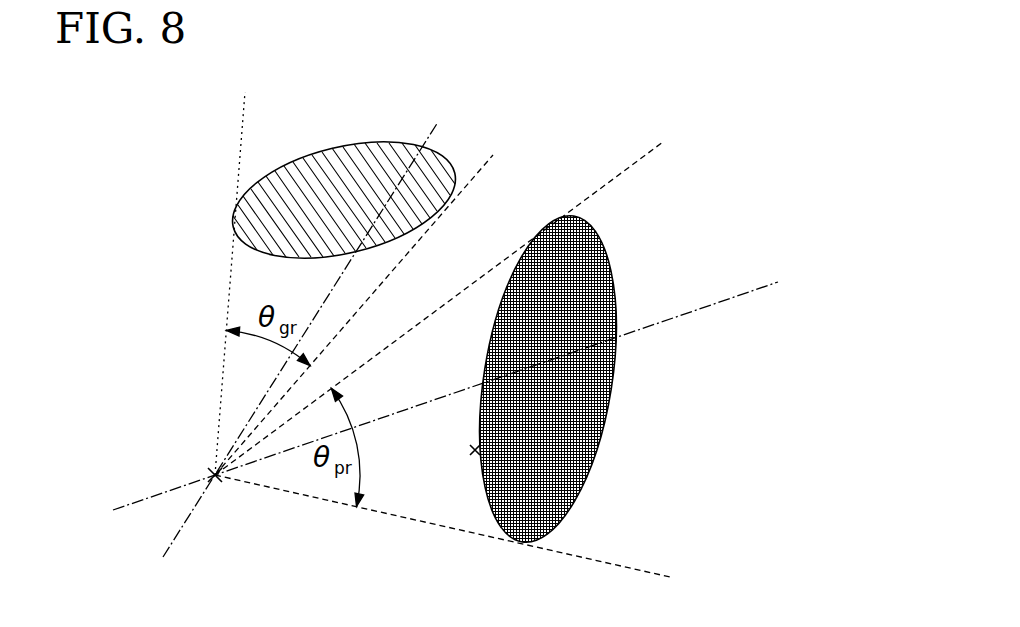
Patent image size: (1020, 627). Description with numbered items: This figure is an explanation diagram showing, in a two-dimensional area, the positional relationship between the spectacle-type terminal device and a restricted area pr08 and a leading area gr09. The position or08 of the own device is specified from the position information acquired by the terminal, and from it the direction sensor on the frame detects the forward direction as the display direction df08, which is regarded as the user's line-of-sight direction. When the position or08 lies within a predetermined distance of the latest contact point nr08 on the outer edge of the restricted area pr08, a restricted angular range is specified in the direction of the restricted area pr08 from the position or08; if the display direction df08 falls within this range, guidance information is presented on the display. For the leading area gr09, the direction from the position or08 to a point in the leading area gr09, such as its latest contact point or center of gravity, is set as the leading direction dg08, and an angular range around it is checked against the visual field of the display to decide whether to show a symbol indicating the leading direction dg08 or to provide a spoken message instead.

The position of the own device or08 is at (181, 463).
The latest contact point nr08 is at (442, 456).
The restricted area pr08 is at (607, 418).
The leading area gr09 is at (328, 153).
The leading direction dg08 is at (325, 323).
The display direction df08 is at (479, 389).